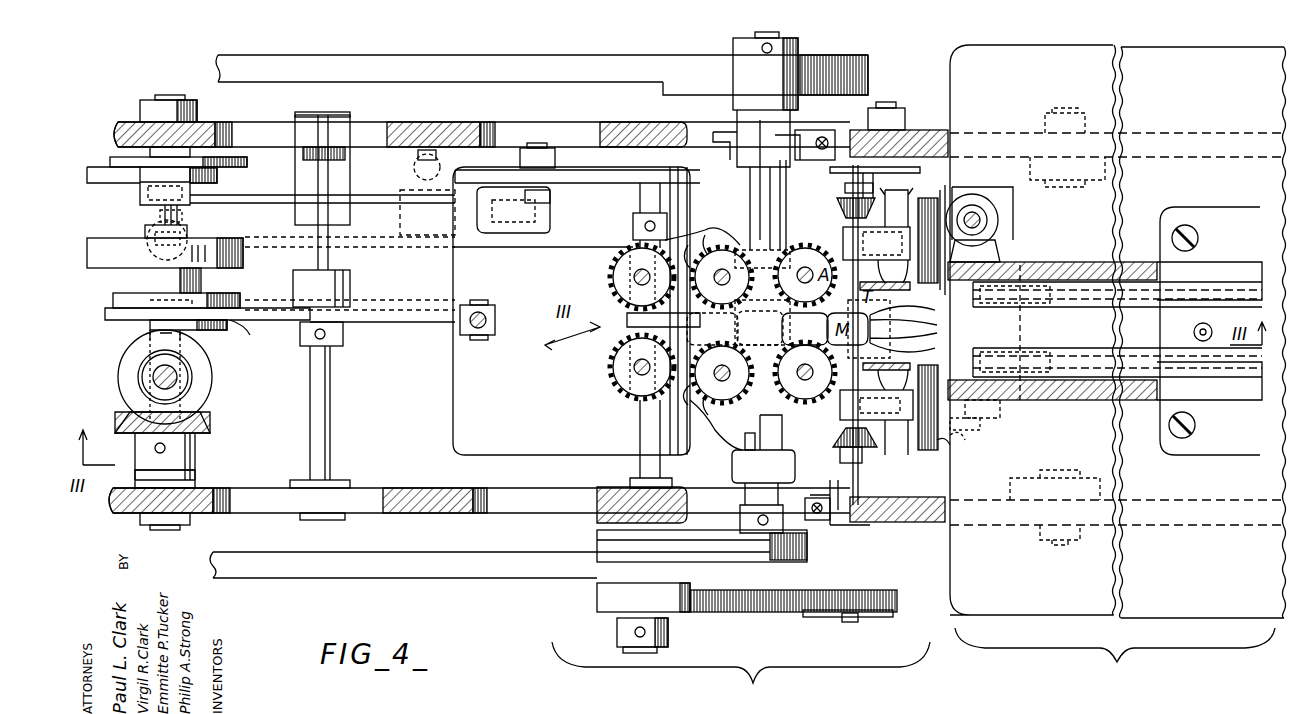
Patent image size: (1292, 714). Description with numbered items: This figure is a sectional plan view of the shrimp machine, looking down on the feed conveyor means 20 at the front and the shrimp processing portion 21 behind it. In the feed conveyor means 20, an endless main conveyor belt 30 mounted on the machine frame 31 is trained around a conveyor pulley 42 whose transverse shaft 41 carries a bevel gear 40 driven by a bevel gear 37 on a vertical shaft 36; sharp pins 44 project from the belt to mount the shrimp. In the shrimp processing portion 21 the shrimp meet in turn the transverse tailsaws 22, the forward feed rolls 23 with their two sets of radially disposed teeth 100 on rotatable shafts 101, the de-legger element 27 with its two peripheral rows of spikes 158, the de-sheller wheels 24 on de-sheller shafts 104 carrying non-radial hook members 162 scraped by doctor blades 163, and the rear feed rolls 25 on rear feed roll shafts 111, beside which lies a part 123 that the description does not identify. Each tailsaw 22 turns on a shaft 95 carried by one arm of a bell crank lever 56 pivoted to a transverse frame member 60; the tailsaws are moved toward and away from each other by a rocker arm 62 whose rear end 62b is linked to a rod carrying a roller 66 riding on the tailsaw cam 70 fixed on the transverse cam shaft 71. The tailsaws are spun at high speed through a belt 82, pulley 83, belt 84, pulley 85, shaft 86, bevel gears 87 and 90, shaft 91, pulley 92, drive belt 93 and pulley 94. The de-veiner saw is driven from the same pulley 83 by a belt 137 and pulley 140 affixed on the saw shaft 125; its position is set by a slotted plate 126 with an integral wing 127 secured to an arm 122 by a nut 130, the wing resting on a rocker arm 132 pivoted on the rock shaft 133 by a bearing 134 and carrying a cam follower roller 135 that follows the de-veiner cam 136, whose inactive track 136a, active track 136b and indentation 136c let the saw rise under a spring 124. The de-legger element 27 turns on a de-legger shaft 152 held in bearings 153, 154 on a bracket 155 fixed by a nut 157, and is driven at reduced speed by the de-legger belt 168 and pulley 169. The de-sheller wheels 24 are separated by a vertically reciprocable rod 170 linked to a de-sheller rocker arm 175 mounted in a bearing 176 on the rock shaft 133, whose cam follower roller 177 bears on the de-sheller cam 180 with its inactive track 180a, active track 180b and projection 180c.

The feed conveyor means 20 is at (1118, 371).
The shrimp processing portion 21 is at (741, 678).
The transverse tailsaw 22 is at (865, 482).
The forward feed roll 23 is at (836, 335).
The de-sheller wheel 24 is at (703, 329).
The rear feed roll 25 is at (613, 268).
The de-legger element 27 is at (682, 311).
The endless main conveyor belt 30 is at (1135, 358).
The machine frame 31 is at (372, 122).
The vertical shaft 36 is at (988, 215).
The bevel gear 37 is at (999, 222).
The bevel gear 40 is at (1003, 246).
The transverse shaft 41 is at (990, 410).
The conveyor pulley 42 is at (968, 292).
The sharp pin 44 is at (1194, 332).
The bell crank lever 56 is at (910, 210).
The transverse frame member 60 is at (895, 522).
The rocker arm 62 is at (627, 320).
The rear end of rocker arm 62b is at (278, 240).
The roller 66 is at (146, 236).
The tailsaw cam 70 is at (252, 256).
The transverse cam shaft 71 is at (170, 100).
The belt 82 is at (470, 580).
The pulley 83 is at (597, 585).
The belt 84 is at (758, 612).
The pulley 85 is at (876, 618).
The shaft 86 is at (848, 622).
The bevel gear 87 is at (845, 200).
The bevel gear 90 is at (876, 212).
The shaft 91 is at (967, 441).
The pulley 92 is at (948, 200).
The drive belt 93 is at (960, 205).
The pulley 94 is at (940, 200).
The shaft 95 is at (967, 425).
The radially disposed teeth 100 is at (772, 317).
The rotatable shaft 101 is at (795, 410).
The de-sheller shaft 104 is at (722, 324).
The rear feed roll shaft 111 is at (636, 280).
The arm 122 is at (568, 170).
The block 123 is at (633, 205).
The spring 124 is at (427, 182).
The saw shaft 125 is at (760, 448).
The slotted plate 126 is at (500, 185).
The wing 127 is at (543, 233).
The nut 130 is at (538, 148).
The rocker arm 132 is at (378, 196).
The rock shaft 133 is at (332, 408).
The bearing 134 is at (352, 165).
The cam follower roller 135 is at (150, 192).
The de-veiner cam 136 is at (254, 134).
The inactive track 136a is at (120, 140).
The active track 136b is at (98, 178).
The indentation 136c is at (232, 179).
The belt 137 is at (705, 545).
The pulley 140 is at (790, 560).
The de-legger shaft 152 is at (767, 32).
The bearing 153 is at (737, 160).
The bearing 154 is at (765, 215).
The bracket 155 is at (815, 130).
The nut 157 is at (890, 108).
The spikes 158 is at (812, 329).
The hook members 162 is at (685, 321).
The doctor blade 163 is at (712, 312).
The de-legger belt 168 is at (601, 62).
The pulley 169 is at (830, 56).
The vertically reciprocable rod 170 is at (490, 320).
The de-sheller rocker arm 175 is at (376, 322).
The bearing 176 is at (350, 294).
The cam follower roller 177 is at (136, 293).
The de-sheller cam 180 is at (225, 330).
The inactive track 180a is at (262, 336).
The active track 180b is at (242, 300).
The projection 180c is at (212, 298).